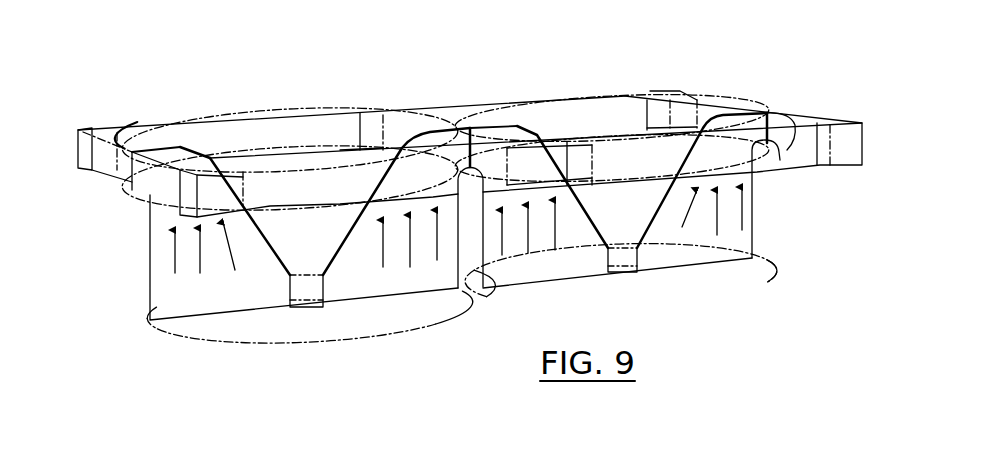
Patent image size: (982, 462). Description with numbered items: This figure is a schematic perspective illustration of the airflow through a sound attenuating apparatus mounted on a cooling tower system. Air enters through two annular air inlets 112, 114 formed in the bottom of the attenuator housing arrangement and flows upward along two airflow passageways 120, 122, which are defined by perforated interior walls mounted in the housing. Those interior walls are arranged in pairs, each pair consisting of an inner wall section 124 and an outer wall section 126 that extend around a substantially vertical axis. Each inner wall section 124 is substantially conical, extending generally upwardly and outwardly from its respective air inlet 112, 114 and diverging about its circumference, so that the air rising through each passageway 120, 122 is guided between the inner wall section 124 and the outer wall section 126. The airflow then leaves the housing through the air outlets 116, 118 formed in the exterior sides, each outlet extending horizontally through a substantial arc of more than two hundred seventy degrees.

The annular air inlet 112 is at (436, 325).
The annular air inlet 114 is at (720, 290).
The air outlet 116 is at (206, 125).
The air outlet 118 is at (585, 112).
The airflow passageway 120 is at (165, 275).
The airflow passageway 122 is at (742, 240).
The inner wall section 124 is at (275, 250).
The outer wall section 126 is at (148, 240).